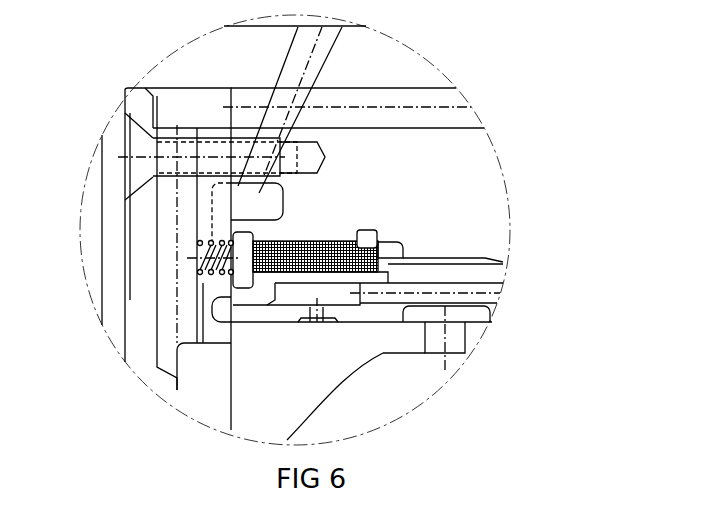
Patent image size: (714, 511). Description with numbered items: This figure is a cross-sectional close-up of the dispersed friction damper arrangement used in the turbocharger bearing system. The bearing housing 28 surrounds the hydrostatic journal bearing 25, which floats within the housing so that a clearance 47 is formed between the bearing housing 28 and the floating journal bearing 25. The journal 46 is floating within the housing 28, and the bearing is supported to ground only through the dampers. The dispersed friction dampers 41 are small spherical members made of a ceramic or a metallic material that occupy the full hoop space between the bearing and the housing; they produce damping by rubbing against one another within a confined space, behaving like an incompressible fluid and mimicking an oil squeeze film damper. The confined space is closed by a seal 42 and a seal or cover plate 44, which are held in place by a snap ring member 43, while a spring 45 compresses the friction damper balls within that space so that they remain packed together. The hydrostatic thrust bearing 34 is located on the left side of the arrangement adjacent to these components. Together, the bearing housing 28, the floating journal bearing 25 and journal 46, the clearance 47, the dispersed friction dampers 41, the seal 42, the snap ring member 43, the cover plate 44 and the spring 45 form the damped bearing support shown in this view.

The hydrostatic journal bearing 25 is at (347, 312).
The bearing housing 28 is at (472, 177).
The hydrostatic thrust bearing 34 is at (212, 380).
The dispersed friction damper 41 is at (327, 248).
The seal 42 is at (392, 250).
The snap ring member 43 is at (367, 233).
The seal or cover plate 44 is at (245, 270).
The spring 45 is at (197, 262).
The journal 46 is at (300, 358).
The clearance 47 is at (487, 260).